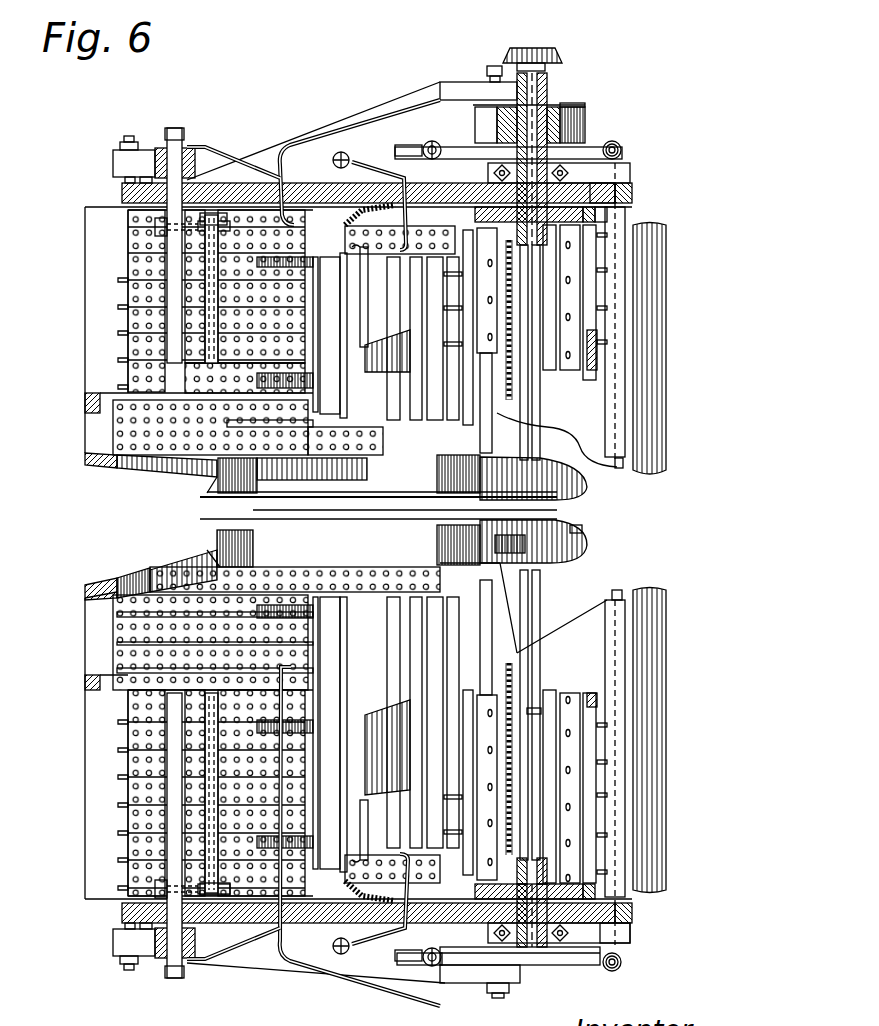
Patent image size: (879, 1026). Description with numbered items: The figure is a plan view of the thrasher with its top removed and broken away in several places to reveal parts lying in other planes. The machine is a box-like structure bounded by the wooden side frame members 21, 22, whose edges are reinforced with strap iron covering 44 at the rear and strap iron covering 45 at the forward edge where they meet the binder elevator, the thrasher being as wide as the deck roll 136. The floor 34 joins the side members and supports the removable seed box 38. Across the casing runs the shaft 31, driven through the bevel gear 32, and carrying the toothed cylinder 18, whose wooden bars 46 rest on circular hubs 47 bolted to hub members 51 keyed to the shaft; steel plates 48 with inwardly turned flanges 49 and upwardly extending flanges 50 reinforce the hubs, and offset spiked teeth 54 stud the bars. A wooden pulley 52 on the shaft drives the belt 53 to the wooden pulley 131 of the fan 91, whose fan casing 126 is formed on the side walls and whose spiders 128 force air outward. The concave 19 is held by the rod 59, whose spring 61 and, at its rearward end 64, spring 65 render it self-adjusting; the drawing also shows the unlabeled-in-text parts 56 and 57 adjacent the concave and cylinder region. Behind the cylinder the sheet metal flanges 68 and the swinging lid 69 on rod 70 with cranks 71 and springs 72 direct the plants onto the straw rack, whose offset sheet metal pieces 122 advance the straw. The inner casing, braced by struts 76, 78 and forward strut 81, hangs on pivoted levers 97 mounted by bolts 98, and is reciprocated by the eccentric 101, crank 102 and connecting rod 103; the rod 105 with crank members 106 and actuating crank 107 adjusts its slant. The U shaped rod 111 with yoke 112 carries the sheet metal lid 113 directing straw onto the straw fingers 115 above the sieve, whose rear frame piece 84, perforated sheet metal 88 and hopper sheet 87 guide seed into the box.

The toothed cylinder 18 is at (600, 216).
The concave 19 is at (607, 395).
The frame member 21 is at (605, 925).
The frame member 22 is at (616, 196).
The shaft 31 is at (542, 712).
The bevel gear 32 is at (530, 48).
The floor 34 is at (265, 520).
The seed box 38 is at (205, 504).
The strap iron covering 44 is at (122, 193).
The strap iron covering 45 is at (632, 194).
The wooden bars 46 is at (563, 369).
The circular hubs 47 is at (576, 885).
The steel plates 48 is at (617, 205).
The inwardly turned flanges 49 is at (588, 222).
The upwardly extending flanges 50 is at (592, 213).
The hub members 51 is at (545, 858).
The wooden pulley 52 is at (560, 108).
The belt 53 is at (585, 125).
The spiked teeth 54 is at (608, 308).
The pin 56 is at (604, 269).
The chain of balls 57 is at (514, 399).
The rod 59 is at (621, 470).
The spring 61 is at (617, 144).
The rearward end 64 is at (400, 147).
The spring 65 is at (432, 142).
The sheet metal flanges 68 is at (362, 208).
The swinging lid 69 is at (384, 370).
The rod 70 is at (368, 333).
The cranks 71 is at (356, 158).
The springs 72 is at (340, 152).
The strut 76 is at (128, 412).
The strut 78 is at (95, 383).
The forward strut 81 is at (506, 612).
The rear frame piece 84 is at (84, 468).
The rectangular sheet of metal 87 is at (153, 462).
The perforated sheet metal 88 is at (130, 410).
The fan 91 is at (577, 530).
The pivoted lever 97 is at (113, 168).
The bolt 98 is at (128, 142).
The eccentric 101 is at (530, 955).
The crank 102 is at (509, 995).
The connecting rod 103 is at (383, 104).
The rod 105 is at (278, 176).
The crank member 106 is at (210, 146).
The actuating crank 107 is at (305, 262).
The U shaped rod 111 is at (155, 226).
The yoke 112 is at (213, 366).
The sheet metal lid 113 is at (212, 344).
The straw fingers 115 is at (257, 417).
The sheet metal pieces 122 is at (426, 598).
The fan casing 126 is at (578, 556).
The spiders 128 is at (512, 553).
The wooden pulley 131 is at (582, 105).
The deck roll 136 is at (666, 460).